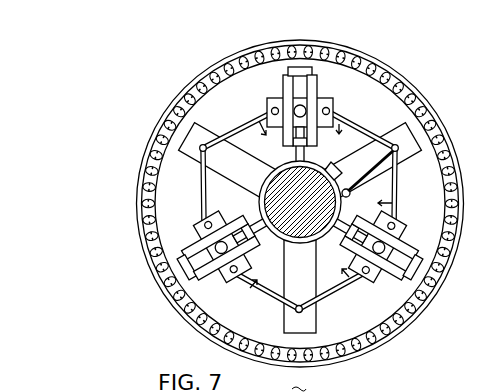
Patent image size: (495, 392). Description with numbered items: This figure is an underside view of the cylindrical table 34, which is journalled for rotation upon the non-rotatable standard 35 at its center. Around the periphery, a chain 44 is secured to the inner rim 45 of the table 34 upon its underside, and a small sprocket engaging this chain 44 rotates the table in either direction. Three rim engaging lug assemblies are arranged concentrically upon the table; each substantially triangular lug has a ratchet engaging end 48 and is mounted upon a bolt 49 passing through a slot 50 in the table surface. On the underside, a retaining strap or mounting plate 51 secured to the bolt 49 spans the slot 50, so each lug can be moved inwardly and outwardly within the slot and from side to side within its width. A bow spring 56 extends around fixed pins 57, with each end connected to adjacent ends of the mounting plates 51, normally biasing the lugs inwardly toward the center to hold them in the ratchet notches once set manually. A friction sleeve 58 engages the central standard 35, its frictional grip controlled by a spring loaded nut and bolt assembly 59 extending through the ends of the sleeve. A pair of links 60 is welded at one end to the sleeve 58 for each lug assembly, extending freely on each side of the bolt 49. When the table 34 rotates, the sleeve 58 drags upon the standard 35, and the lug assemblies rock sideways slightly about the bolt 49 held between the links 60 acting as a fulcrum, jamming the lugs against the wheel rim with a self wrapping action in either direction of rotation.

The cylindrical table 34 is at (390, 305).
The standard 35 is at (302, 243).
The chain 44 is at (368, 66).
The inner rim 45 is at (448, 264).
The ratchet engaging end 48 is at (242, 254).
The bolt 49 is at (318, 91).
The slot 50 is at (299, 66).
The mounting plate 51 is at (368, 282).
The bow spring 56 is at (400, 199).
The fixed pins 57 is at (390, 154).
The friction sleeve 58 is at (256, 203).
The spring loaded nut and bolt assembly 59 is at (351, 147).
The links 60 is at (202, 286).